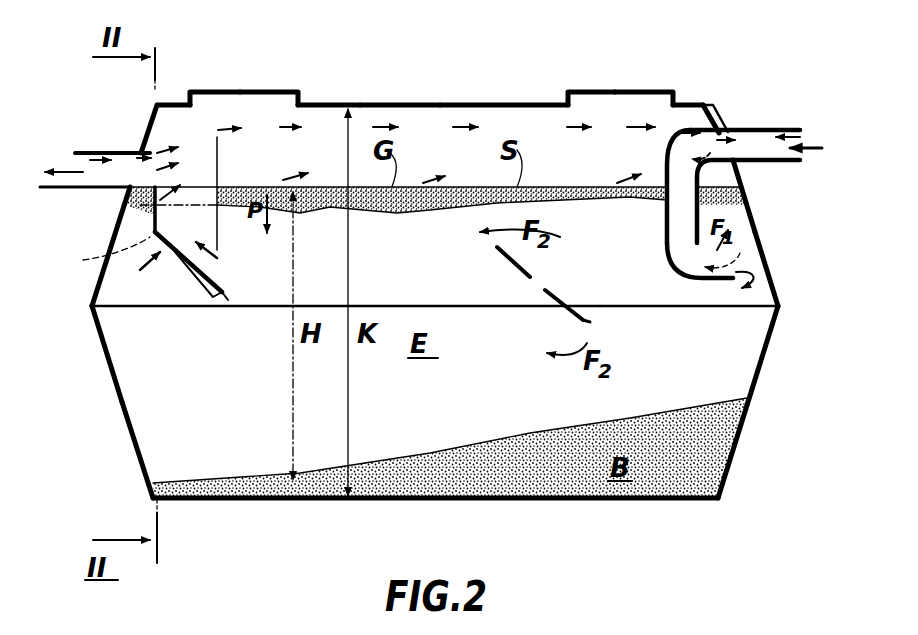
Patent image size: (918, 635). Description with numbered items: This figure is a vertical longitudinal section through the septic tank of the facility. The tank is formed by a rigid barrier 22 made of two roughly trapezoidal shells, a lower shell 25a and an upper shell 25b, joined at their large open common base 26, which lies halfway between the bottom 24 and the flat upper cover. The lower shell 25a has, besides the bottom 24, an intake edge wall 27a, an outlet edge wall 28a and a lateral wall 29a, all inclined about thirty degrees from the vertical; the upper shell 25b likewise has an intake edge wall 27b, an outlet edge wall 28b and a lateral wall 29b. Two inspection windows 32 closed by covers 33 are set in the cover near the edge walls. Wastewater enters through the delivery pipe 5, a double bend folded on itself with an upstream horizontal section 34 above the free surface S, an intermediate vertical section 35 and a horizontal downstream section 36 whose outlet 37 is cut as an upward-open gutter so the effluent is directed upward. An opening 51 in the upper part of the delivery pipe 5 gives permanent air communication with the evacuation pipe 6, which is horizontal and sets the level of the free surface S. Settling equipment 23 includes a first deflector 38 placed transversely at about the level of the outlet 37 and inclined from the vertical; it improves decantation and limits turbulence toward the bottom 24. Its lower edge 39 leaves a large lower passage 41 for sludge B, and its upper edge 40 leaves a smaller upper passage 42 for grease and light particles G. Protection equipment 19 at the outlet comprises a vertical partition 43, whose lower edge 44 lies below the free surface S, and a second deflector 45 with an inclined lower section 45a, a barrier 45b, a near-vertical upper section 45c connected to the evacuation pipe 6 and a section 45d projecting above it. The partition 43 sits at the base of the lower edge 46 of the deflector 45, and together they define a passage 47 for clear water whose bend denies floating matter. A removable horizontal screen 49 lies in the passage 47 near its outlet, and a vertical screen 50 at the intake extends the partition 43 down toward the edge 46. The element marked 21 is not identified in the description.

The delivery pipe 5 is at (753, 126).
The evacuation pipe 6 is at (103, 149).
The equipment of protection 19 is at (133, 272).
The tank 21 is at (318, 104).
The rigid barrier 22 is at (403, 101).
The equipment of settling 23 is at (567, 291).
The bottom 24 is at (517, 503).
The lower shell 25a is at (130, 433).
The upper shell 25b is at (490, 103).
The large open common base 26 is at (745, 307).
The edge wall of intake 27a is at (790, 372).
The edge wall of intake 27b is at (750, 212).
The edge wall of outlet 28a is at (100, 350).
The edge wall of outlet 28b is at (117, 230).
The lateral wall 29a is at (232, 407).
The lateral wall 29b is at (342, 301).
The inspection window 32 is at (215, 103).
The cover 33 is at (268, 91).
The upstream horizontal section 34 is at (773, 130).
The intermediate vertical section 35 is at (666, 218).
The downstream section 36 is at (708, 279).
The outlet 37 is at (740, 252).
The first deflector 38 is at (513, 261).
The lower edge 39 is at (600, 313).
The upper edge 40 is at (500, 243).
The lower passage 41 is at (605, 412).
The upper passage 42 is at (455, 248).
The vertical partition 43 is at (218, 168).
The lower edge 44 is at (218, 222).
The second deflector 45 is at (182, 265).
The lower section 45a is at (186, 270).
The barrier 45b is at (95, 261).
The upper section 45c is at (118, 217).
The section 45d is at (148, 148).
The lower edge 46 is at (228, 300).
The passage 47 is at (236, 293).
The screen 49 is at (197, 205).
The vertical screen 50 is at (218, 258).
The opening 51 is at (707, 103).